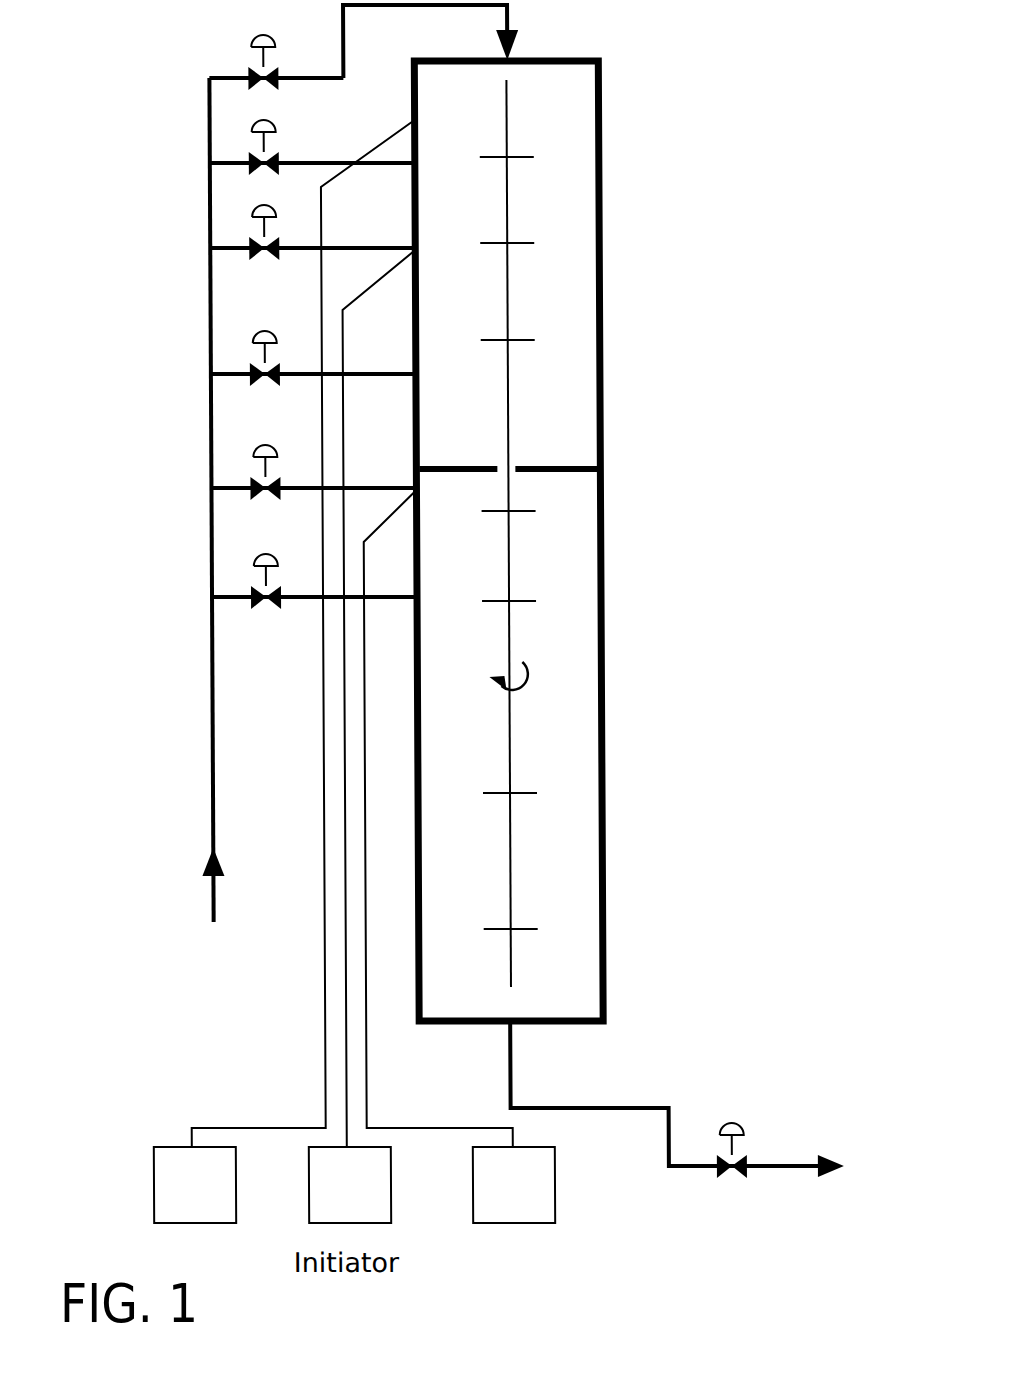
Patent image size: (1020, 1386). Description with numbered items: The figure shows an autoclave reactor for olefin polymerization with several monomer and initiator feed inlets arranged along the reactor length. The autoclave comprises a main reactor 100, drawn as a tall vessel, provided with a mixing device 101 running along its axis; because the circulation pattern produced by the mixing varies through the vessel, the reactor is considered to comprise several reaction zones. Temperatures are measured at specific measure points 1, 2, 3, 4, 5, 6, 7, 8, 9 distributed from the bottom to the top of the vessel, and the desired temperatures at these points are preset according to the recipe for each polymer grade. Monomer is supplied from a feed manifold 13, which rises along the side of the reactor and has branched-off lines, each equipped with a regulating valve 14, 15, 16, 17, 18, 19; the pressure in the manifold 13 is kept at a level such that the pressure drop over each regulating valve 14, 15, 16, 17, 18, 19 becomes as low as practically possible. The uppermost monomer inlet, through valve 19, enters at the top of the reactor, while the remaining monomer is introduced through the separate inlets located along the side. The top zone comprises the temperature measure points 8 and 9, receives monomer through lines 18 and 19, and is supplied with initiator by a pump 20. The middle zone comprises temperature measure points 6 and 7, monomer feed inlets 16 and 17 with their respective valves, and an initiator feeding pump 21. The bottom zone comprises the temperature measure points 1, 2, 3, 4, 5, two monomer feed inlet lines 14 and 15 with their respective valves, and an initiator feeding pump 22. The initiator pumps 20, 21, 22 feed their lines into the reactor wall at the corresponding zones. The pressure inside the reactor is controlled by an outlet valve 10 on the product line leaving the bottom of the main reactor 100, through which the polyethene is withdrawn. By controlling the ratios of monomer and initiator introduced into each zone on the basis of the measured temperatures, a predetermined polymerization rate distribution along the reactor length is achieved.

The temperature measure point 1 is at (569, 977).
The temperature measure point 2 is at (568, 893).
The temperature measure point 3 is at (568, 760).
The temperature measure point 4 is at (567, 638).
The temperature measure point 5 is at (567, 533).
The temperature measure point 6 is at (566, 398).
The temperature measure point 7 is at (565, 283).
The temperature measure point 8 is at (565, 199).
The temperature measure point 9 is at (506, 96).
The outlet valve 10 is at (781, 1162).
The feed manifold 13 is at (209, 684).
The regulating valve 14 is at (278, 583).
The regulating valve 15 is at (277, 474).
The regulating valve 16 is at (277, 360).
The regulating valve 17 is at (276, 234).
The regulating valve 18 is at (276, 149).
The regulating valve 19 is at (239, 64).
The initiator pump 20 is at (285, 671).
The initiator feeding pump 21 is at (362, 736).
The initiator feeding pump 22 is at (459, 856).
The main reactor 100 is at (593, 590).
The mixing device 101 is at (488, 533).